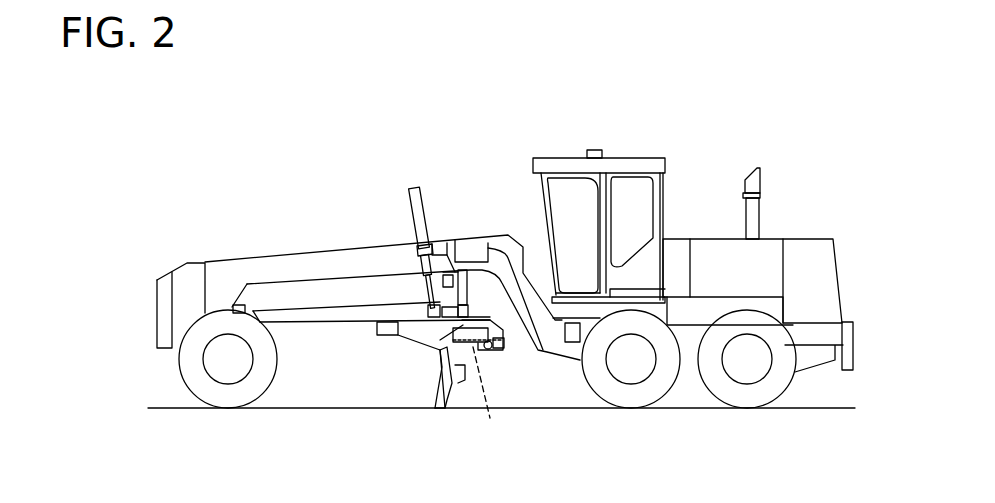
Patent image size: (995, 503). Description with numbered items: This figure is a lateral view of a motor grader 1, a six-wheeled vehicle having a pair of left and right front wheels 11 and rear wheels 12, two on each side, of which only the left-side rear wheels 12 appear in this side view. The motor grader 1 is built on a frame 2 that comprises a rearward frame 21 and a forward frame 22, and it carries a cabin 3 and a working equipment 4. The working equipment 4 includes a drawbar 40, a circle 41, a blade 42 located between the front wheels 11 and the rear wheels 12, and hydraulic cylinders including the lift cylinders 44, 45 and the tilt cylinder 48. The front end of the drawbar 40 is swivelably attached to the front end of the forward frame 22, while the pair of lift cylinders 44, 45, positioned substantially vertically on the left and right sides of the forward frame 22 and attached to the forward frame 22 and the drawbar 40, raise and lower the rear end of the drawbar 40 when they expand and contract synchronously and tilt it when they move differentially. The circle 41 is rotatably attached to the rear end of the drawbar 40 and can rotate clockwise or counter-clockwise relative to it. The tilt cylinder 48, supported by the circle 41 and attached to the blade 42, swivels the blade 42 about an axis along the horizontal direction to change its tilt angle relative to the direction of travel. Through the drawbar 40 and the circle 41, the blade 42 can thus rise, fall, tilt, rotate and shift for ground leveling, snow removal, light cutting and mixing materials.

The motor grader 1 is at (333, 148).
The frame 2 is at (502, 212).
The cabin 3 is at (640, 158).
The working equipment 4 is at (396, 397).
The front wheels 11 is at (223, 403).
The rear wheels 12 is at (628, 398).
The rearward frame 21 is at (810, 357).
The forward frame 22 is at (303, 262).
The drawbar 40 is at (303, 320).
The circle 41 is at (388, 335).
The blade 42 is at (445, 387).
The lift cylinder 44 is at (422, 190).
The lift cylinder 45 is at (424, 252).
The tilt cylinder 48 is at (491, 401).